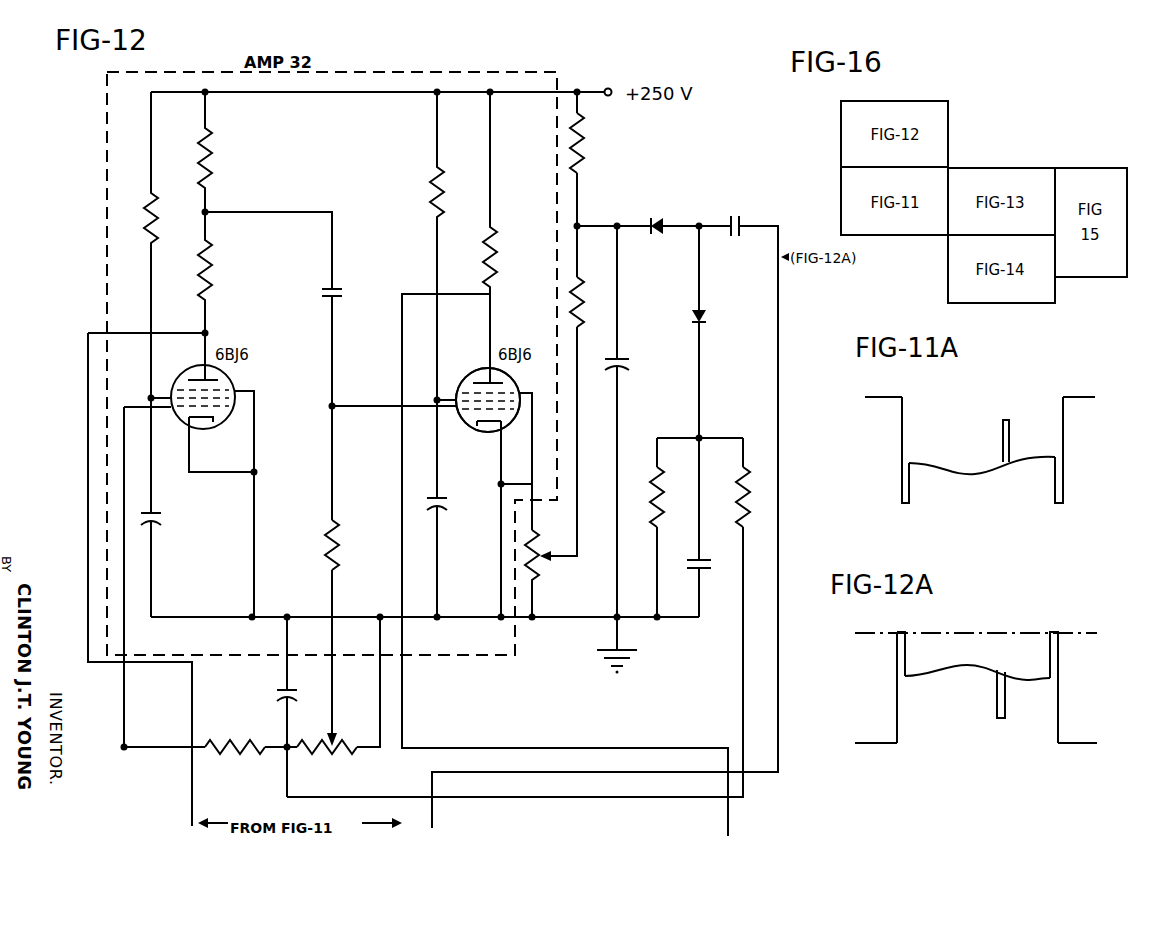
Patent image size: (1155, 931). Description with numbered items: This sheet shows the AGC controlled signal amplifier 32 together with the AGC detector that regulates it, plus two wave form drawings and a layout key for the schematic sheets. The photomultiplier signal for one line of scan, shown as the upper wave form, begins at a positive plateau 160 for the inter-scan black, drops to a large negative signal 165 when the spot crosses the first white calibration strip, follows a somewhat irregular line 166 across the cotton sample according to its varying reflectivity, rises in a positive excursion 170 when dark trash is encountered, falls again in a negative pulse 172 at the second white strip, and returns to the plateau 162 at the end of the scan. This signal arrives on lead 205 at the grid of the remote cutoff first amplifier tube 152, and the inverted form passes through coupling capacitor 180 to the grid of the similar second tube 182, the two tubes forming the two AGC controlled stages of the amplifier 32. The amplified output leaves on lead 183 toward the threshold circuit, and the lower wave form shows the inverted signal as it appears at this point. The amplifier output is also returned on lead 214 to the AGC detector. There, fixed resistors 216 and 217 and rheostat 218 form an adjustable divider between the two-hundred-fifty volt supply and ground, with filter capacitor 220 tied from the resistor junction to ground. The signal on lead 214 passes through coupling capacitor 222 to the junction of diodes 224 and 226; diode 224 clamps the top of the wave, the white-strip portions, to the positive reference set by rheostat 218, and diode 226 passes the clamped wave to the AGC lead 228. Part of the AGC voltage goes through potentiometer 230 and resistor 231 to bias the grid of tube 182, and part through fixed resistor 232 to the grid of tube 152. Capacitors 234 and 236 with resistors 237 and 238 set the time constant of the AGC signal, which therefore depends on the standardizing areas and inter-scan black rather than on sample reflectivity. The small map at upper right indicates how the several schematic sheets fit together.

In FIG. 12, the AGC controlled amplifier 32 is at (102, 150).
In FIG. 12, the coupling capacitor 180 is at (320, 290).
In FIG. 12, the input lead 205 is at (88, 358).
In FIG. 12, the first amplifier tube 152 is at (205, 420).
In FIG. 12, the resistor 231 is at (328, 545).
In FIG. 12, the fixed resistor 216 is at (580, 140).
In FIG. 12, the diode 224 is at (657, 220).
In FIG. 12, the coupling capacitor 222 is at (735, 216).
In FIG. 12, the fixed resistor 217 is at (577, 300).
In FIG. 12, the diode 226 is at (706, 316).
In FIG. 12, the second amplifier tube 182 is at (470, 385).
In FIG. 12, the filter capacitor 220 is at (624, 362).
In FIG. 12, the resistor 237 is at (650, 475).
In FIG. 12, the AGC lead 228 is at (718, 438).
In FIG. 12, the resistor 238 is at (752, 497).
In FIG. 12, the rheostat 218 is at (525, 548).
In FIG. 12, the capacitor 234 is at (704, 575).
In FIG. 12, the lead 183 is at (552, 748).
In FIG. 12, the capacitor 236 is at (280, 695).
In FIG. 12, the fixed resistor 232 is at (225, 746).
In FIG. 12, the potentiometer 230 is at (352, 752).
In FIG. 12, the lead 214 is at (432, 778).
In FIG. 11A, the positive plateau 160 is at (870, 397).
In FIG. 12A, the positive plateau 160 is at (868, 745).
In FIG. 11A, the plateau 162 is at (1083, 397).
In FIG. 12A, the plateau 162 is at (1078, 745).
In FIG. 11A, the negative signal 165 is at (904, 500).
In FIG. 12A, the negative signal 165 is at (897, 632).
In FIG. 11A, the signal line 166 is at (945, 470).
In FIG. 12A, the signal line 166 is at (940, 678).
In FIG. 11A, the positive excursion 170 is at (1025, 410).
In FIG. 12A, the positive excursion 170 is at (1000, 720).
In FIG. 11A, the negative pulse 172 is at (1065, 500).
In FIG. 12A, the negative pulse 172 is at (1055, 632).